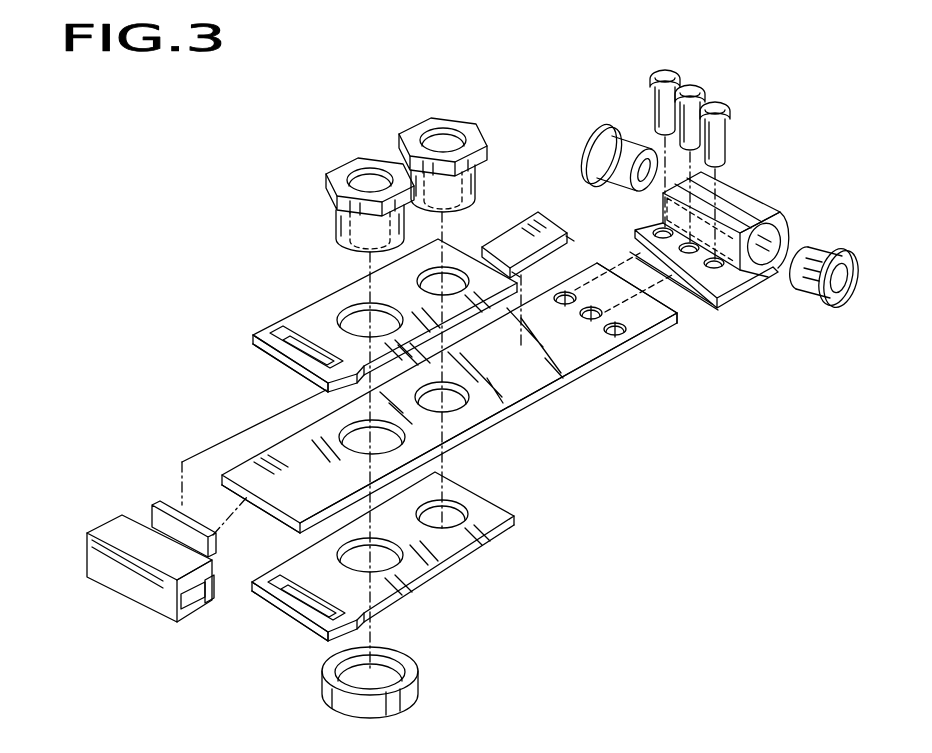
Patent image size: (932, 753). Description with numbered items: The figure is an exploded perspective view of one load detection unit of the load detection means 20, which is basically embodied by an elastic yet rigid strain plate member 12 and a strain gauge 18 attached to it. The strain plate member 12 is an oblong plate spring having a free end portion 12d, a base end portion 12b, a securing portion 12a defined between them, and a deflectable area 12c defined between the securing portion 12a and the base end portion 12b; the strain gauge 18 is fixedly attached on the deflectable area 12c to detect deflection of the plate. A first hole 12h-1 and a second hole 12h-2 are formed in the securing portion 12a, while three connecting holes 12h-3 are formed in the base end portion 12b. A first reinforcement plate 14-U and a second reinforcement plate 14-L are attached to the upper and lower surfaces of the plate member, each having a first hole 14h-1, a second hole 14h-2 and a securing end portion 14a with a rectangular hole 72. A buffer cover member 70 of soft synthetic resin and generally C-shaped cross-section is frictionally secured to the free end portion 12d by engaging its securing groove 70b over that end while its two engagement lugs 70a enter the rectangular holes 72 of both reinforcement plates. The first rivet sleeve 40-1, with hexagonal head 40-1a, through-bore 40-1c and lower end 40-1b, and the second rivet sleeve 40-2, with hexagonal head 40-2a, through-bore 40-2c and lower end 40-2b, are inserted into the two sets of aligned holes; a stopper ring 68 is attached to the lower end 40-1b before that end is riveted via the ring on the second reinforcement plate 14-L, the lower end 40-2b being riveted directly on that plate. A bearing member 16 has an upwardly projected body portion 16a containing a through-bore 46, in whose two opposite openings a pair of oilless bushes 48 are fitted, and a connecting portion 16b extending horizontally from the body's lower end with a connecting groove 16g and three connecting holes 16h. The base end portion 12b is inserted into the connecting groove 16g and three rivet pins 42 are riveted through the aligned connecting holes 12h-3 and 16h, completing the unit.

The strain plate member 12 is at (533, 406).
The securing portion 12a is at (452, 412).
The base end portion 12b is at (664, 332).
The deflectable area 12c is at (543, 378).
The free end portion 12d is at (258, 456).
The first hole 12h-1 is at (388, 447).
The second hole 12h-2 is at (462, 404).
The connecting holes 12h-3 is at (616, 336).
The first reinforcement plate 14-U is at (334, 300).
The second reinforcement plate 14-L is at (478, 556).
The securing end portion 14a is at (251, 331).
The first hole 14h-1 is at (339, 321).
The second hole 14h-2 is at (424, 289).
The bearing member 16 is at (750, 233).
The body portion 16a is at (725, 185).
The connecting portion 16b is at (768, 284).
The connecting groove 16g is at (752, 298).
The connecting holes 16h is at (697, 246).
The strain gauge 18 is at (542, 228).
The load detection means 20 is at (627, 410).
The first rivet sleeve 40-1 is at (315, 169).
The head 40-1a is at (343, 173).
The lower end 40-1b is at (336, 216).
The through-bore 40-1c is at (370, 176).
The second rivet sleeve 40-2 is at (485, 130).
The head 40-2a is at (457, 124).
The lower end 40-2b is at (470, 210).
The through-bore 40-2c is at (442, 137).
The rivet pins 42 is at (713, 108).
The through-bore 46 is at (776, 240).
The oilless bushes 48 is at (613, 130).
The stopper ring 68 is at (418, 688).
The buffer cover member 70 is at (194, 542).
The engagement lugs 70a is at (155, 505).
The securing groove 70b is at (183, 608).
The rectangular hole 72 is at (294, 348).